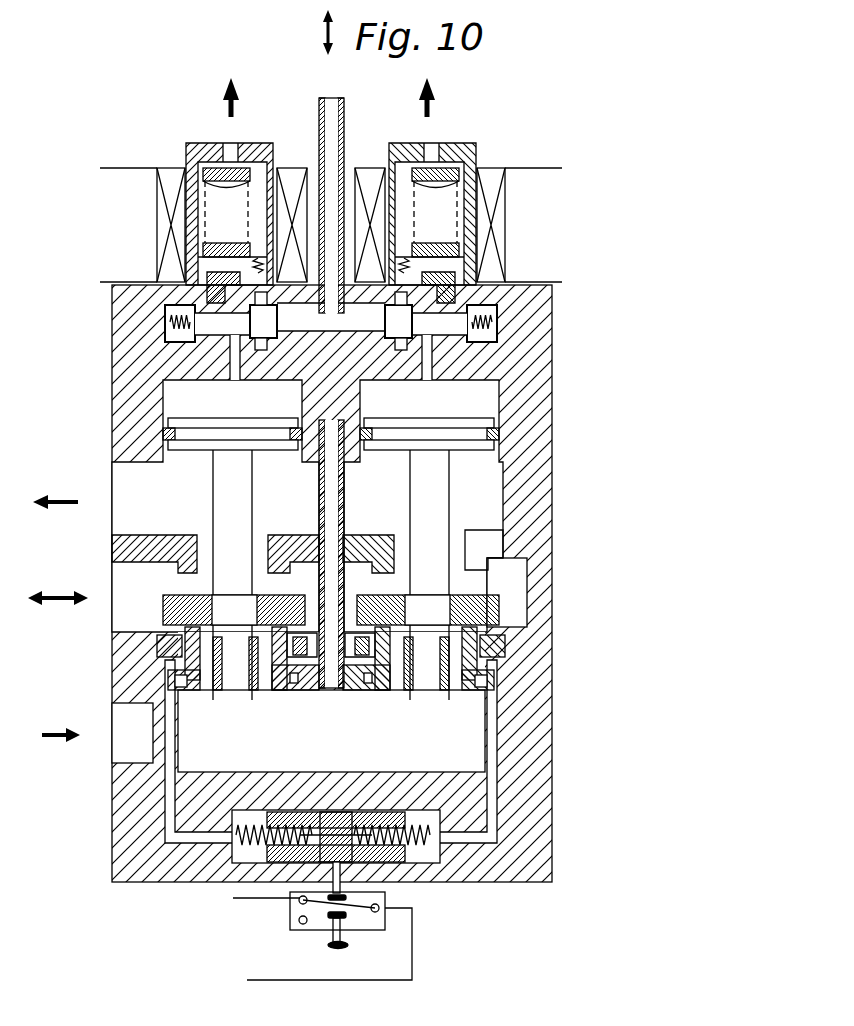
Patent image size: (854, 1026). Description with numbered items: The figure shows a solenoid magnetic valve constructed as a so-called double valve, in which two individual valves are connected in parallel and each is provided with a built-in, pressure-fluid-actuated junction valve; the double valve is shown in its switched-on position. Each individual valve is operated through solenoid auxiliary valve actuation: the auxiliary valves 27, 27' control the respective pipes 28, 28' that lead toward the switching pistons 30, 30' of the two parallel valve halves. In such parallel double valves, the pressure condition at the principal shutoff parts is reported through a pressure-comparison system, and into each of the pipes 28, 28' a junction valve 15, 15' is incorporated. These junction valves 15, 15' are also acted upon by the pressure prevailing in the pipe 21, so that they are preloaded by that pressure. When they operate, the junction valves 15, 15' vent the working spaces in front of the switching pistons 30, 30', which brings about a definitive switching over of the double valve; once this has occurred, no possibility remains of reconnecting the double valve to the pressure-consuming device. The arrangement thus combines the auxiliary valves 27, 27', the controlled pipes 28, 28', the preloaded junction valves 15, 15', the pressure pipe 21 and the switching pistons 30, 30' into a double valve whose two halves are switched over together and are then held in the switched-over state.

The pipe 21 is at (344, 130).
The auxiliary valve 27 is at (193, 223).
The auxiliary valve 27' is at (466, 223).
The junction valve 15 is at (182, 298).
The junction valve 15' is at (482, 295).
The pipe 28 is at (186, 376).
The pipe 28' is at (440, 376).
The switching piston 30 is at (215, 559).
The switching piston 30' is at (424, 559).